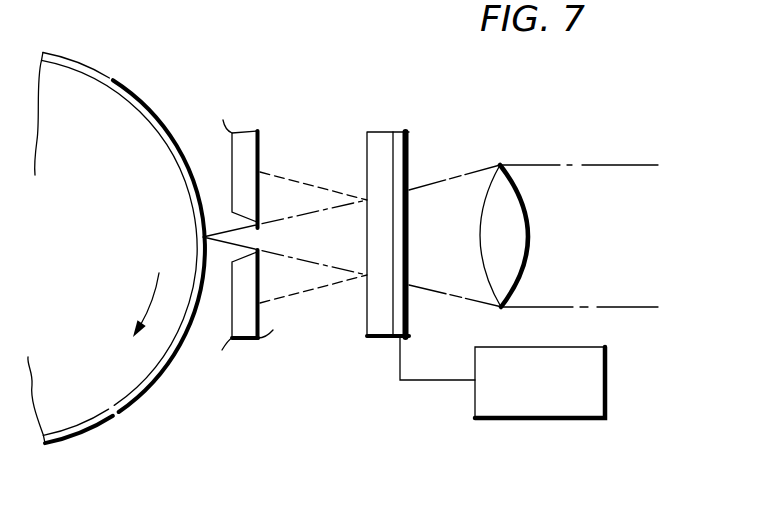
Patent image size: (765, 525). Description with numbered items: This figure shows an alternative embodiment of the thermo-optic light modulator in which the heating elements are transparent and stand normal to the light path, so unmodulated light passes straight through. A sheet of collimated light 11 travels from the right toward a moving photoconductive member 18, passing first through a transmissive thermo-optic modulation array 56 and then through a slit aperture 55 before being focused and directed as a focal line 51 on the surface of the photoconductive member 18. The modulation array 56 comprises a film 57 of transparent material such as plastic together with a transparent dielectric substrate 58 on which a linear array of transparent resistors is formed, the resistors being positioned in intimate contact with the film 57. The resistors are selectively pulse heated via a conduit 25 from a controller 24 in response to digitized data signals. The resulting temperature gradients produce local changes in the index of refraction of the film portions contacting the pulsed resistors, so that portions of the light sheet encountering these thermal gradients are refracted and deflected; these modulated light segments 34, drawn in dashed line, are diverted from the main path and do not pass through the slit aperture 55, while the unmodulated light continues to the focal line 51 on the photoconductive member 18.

The photoconductive member 18 is at (150, 112).
The focal line 51 is at (203, 237).
The slit aperture 55 is at (260, 150).
The modulated light segments 34 is at (289, 179).
The sheet of collimated light 11 is at (587, 163).
The thermo-optic modulation array 56 is at (386, 199).
The transparent dielectric substrate 58 is at (410, 132).
The film 57 is at (367, 335).
The conduit 25 is at (432, 380).
The controller 24 is at (607, 372).